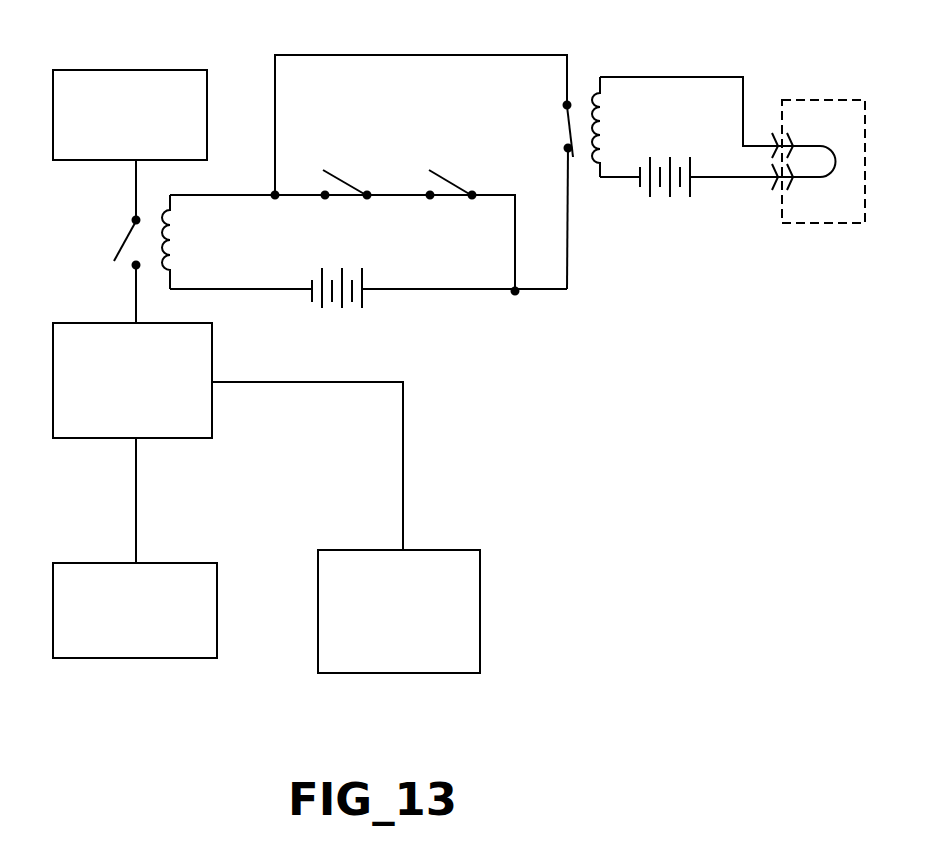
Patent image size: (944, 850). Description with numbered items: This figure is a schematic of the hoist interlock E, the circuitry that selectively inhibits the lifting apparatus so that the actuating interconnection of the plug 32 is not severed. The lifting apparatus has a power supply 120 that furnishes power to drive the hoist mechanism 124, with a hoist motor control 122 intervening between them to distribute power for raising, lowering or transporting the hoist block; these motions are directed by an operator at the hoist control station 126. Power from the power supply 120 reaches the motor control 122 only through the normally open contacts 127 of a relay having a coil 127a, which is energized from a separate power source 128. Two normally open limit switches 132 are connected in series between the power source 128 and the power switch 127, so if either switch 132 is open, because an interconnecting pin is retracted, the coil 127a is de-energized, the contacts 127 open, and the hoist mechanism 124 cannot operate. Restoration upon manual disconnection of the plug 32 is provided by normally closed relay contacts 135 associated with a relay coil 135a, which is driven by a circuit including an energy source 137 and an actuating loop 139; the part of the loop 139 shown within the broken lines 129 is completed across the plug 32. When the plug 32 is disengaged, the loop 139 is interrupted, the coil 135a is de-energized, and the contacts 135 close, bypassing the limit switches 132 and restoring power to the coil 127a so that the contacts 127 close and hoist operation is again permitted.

The power supply 120 is at (108, 70).
The hoist motor control 122 is at (173, 440).
The hoist mechanism 124 is at (143, 660).
The hoist control station 126 is at (382, 675).
The normally open contacts 127 is at (121, 243).
The relay coil 127a is at (178, 251).
The power source 128 is at (338, 313).
The broken lines 129 is at (832, 100).
The limit switch 132 is at (340, 177).
The normally closed relay contacts 135 is at (568, 131).
The relay coil 135a is at (607, 133).
The energy source 137 is at (660, 198).
The actuating loop 139 is at (820, 180).
The plug 32 is at (773, 188).
The hoist interlock E is at (474, 310).